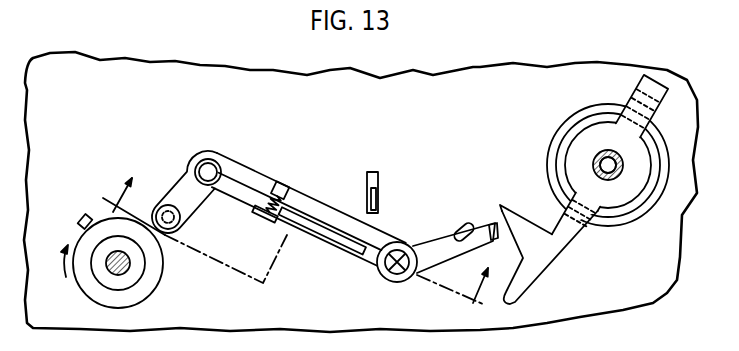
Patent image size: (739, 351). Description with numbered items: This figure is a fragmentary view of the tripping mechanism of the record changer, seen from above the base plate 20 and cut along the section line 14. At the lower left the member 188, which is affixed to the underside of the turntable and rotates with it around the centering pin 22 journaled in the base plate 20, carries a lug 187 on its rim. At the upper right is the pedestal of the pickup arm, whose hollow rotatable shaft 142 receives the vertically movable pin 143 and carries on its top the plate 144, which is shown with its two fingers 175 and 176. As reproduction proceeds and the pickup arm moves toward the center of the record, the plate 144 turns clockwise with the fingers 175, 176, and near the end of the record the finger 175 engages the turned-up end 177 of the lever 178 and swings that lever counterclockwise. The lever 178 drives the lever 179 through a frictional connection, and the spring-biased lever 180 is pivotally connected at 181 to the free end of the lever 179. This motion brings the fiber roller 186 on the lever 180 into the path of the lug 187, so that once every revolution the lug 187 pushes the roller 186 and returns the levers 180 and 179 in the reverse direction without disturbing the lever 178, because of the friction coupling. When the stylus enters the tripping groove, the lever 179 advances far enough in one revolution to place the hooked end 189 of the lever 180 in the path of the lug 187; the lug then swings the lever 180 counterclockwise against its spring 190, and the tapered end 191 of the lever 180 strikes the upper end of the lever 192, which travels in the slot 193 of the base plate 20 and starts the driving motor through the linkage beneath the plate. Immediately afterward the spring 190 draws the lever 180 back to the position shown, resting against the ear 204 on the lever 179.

The section line 14- 14 is at (305, 235).
The base plate 20 is at (610, 304).
The centering pin 22 is at (132, 267).
The hollow rotatable shaft 142 is at (600, 168).
The pin 143 is at (597, 155).
The plate 144 is at (590, 228).
The finger 175 is at (519, 283).
The finger 176 is at (463, 221).
The turned-up end 177 is at (502, 203).
The lever 178 is at (437, 243).
The lever 179 is at (342, 212).
The spring-biased lever 180 is at (237, 181).
The pivot 181 is at (196, 160).
The fiber roller 186 is at (181, 217).
The lug 187 is at (83, 216).
The member 188 is at (92, 291).
The hooked end 189 is at (152, 206).
The spring 190 is at (281, 221).
The tapered end 191 is at (357, 244).
The lever 192 is at (380, 188).
The slot 193 is at (372, 171).
The ear 204 is at (270, 223).